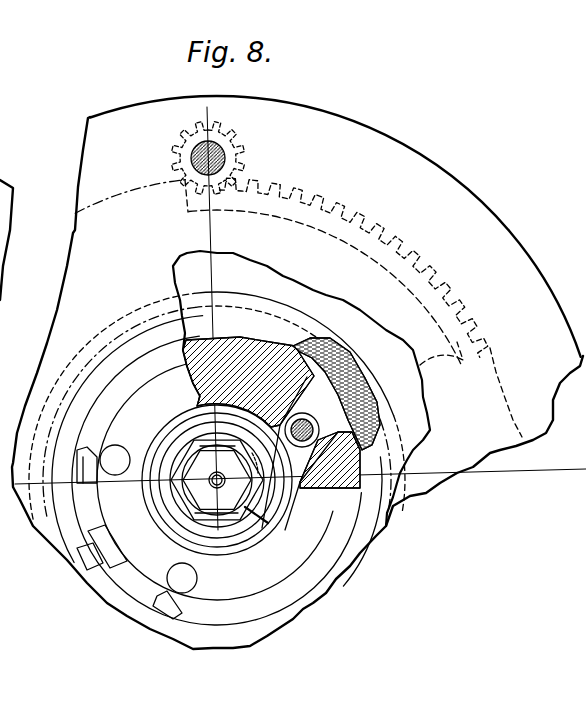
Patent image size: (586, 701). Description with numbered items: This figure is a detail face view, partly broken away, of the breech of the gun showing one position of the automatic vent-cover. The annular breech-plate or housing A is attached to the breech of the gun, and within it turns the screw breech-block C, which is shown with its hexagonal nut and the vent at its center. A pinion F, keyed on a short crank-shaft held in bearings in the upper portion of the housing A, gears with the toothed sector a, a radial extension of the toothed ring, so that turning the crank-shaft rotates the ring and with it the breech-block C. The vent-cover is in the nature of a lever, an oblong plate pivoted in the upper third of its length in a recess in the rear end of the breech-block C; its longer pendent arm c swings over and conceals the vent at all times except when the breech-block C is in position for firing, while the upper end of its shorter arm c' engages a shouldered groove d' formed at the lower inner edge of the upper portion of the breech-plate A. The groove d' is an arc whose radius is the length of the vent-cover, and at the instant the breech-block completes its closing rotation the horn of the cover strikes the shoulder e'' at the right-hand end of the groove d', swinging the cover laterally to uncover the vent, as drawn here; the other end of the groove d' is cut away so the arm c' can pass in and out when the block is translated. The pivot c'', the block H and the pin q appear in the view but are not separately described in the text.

The annular breech-plate or housing A is at (437, 496).
The toothed sector a is at (298, 307).
The pinion F is at (233, 158).
The screw breech-block C is at (217, 458).
The clamp block H is at (110, 564).
The shouldered groove d' is at (271, 396).
The shoulder e'' is at (343, 394).
The longer pendent arm c is at (312, 431).
The pivot pin c'' is at (305, 420).
The shorter arm c' is at (260, 506).
The pin q is at (269, 463).